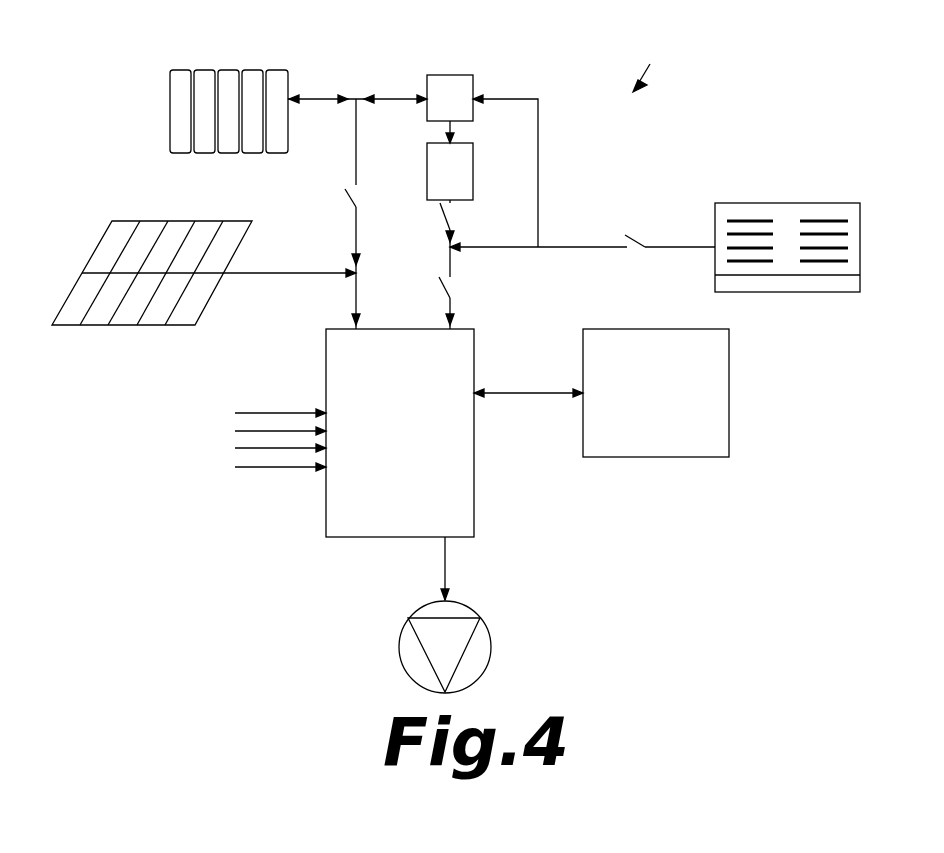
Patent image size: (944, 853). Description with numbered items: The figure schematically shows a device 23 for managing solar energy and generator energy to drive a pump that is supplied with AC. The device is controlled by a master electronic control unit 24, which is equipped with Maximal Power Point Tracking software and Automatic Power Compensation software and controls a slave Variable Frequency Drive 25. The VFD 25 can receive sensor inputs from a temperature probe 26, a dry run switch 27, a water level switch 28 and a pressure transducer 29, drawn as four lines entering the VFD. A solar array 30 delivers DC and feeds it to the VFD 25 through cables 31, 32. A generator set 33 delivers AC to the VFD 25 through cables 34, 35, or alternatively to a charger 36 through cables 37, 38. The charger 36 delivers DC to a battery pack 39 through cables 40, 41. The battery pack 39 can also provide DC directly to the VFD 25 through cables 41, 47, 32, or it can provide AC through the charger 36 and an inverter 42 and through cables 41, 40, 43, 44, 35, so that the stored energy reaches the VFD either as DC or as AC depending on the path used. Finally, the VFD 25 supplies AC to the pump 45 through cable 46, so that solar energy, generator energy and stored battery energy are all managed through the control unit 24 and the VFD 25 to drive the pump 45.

The device 23 is at (655, 64).
The master electronic control unit 24 is at (729, 375).
The slave Variable Frequency Drive 25 is at (458, 328).
The temperature probe 26 is at (240, 412).
The dry run switch 27 is at (236, 430).
The water level switch 28 is at (236, 447).
The pressure transducer 29 is at (236, 466).
The solar array 30 is at (127, 220).
The cable 31 is at (286, 272).
The cable 32 is at (356, 298).
The generator set 33 is at (763, 203).
The cable 34 is at (538, 250).
The cable 35 is at (452, 265).
The charger 36 is at (462, 91).
The cable 37 is at (673, 247).
The cable 38 is at (538, 144).
The battery pack 39 is at (176, 74).
The cable 40 is at (382, 98).
The cable 41 is at (330, 98).
The inverter 42 is at (473, 185).
The cable 43 is at (445, 128).
The cable 44 is at (452, 230).
The pump 45 is at (483, 648).
The cable 46 is at (444, 570).
The cable 47 is at (356, 159).